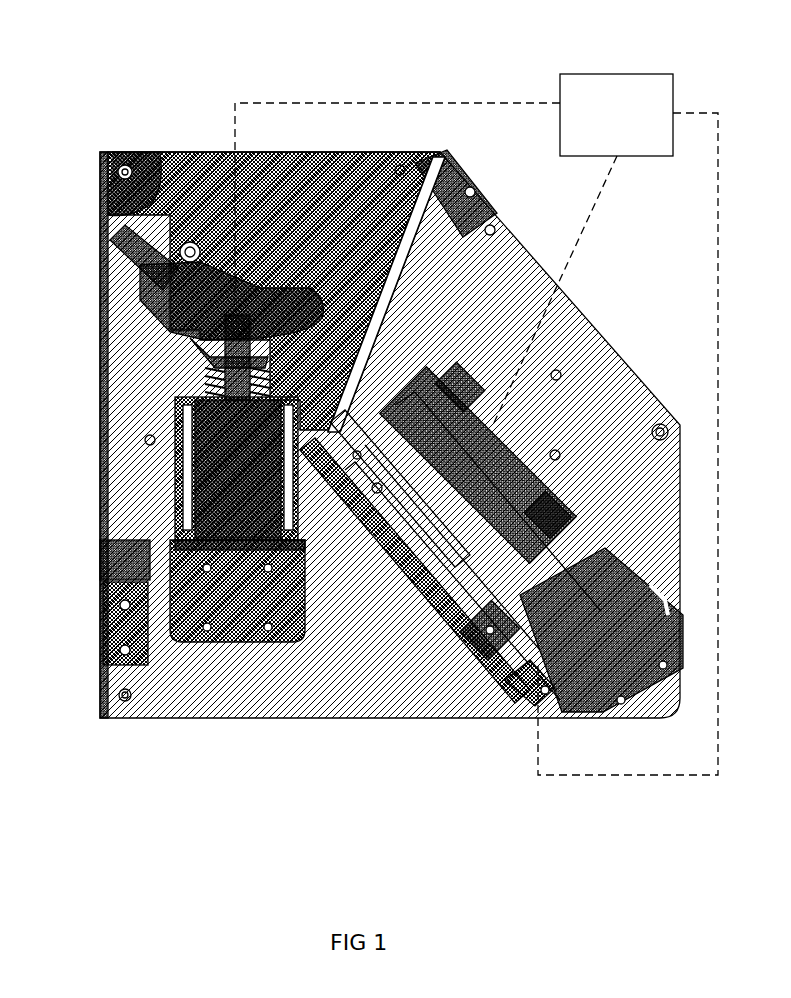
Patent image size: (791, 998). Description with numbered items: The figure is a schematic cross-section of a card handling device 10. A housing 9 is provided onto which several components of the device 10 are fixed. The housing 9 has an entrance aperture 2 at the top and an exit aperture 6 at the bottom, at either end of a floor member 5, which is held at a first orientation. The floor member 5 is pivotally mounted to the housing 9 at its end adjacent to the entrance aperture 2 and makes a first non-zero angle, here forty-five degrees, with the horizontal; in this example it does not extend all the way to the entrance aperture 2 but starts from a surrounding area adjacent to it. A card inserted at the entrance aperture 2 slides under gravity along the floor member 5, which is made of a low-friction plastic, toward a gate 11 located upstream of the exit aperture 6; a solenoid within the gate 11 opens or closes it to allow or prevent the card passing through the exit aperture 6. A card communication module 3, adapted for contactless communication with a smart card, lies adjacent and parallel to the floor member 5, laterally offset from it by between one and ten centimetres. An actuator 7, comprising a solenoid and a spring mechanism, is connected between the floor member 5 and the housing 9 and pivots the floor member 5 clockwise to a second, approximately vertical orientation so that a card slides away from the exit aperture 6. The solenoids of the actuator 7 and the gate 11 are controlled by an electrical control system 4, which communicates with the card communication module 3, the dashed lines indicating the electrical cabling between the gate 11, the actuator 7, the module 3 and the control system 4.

The card handling device 10 is at (159, 80).
The entrance aperture 2 is at (79, 178).
The housing 9 is at (259, 152).
The actuator 7 is at (203, 433).
The floor member 5 is at (380, 538).
The card communication module 3 is at (495, 450).
The exit aperture 6 is at (575, 720).
The gate 11 is at (540, 668).
The electrical control system 4 is at (618, 126).